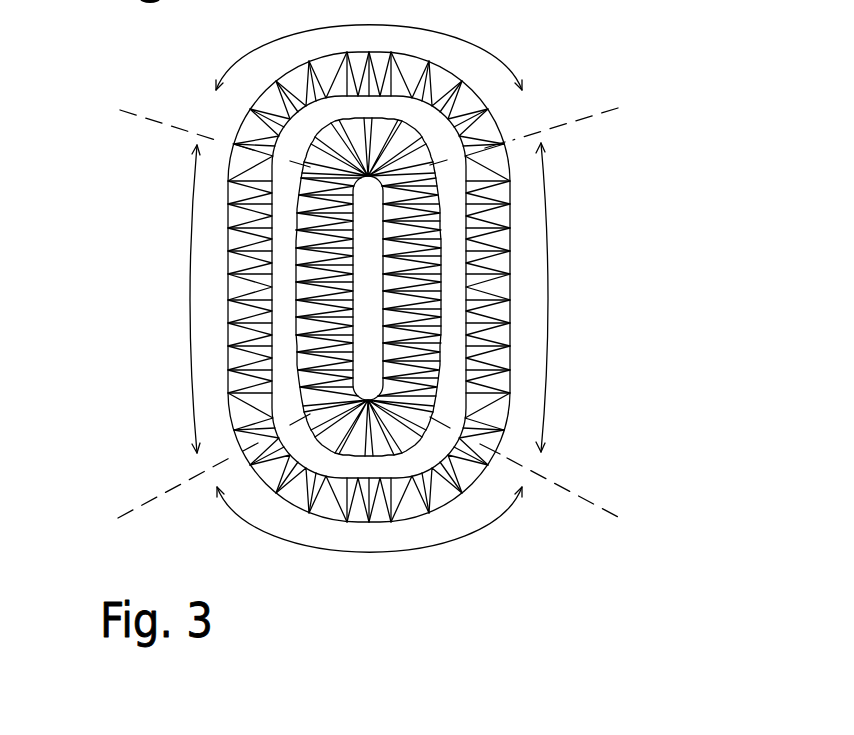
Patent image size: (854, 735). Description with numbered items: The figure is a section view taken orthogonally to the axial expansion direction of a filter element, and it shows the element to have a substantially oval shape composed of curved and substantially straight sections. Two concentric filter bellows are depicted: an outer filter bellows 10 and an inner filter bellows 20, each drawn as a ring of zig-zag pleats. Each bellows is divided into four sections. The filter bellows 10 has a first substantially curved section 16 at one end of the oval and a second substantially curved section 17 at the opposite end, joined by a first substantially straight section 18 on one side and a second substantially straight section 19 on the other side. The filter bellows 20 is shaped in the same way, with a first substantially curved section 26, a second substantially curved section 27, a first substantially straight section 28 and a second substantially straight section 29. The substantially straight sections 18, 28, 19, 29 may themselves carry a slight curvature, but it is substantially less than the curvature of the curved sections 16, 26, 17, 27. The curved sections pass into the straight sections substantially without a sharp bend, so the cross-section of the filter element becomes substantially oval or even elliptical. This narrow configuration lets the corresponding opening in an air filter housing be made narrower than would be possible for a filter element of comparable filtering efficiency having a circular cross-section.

The filter bellows 10 is at (512, 305).
The first substantially curved section 16 is at (412, 56).
The second substantially curved section 17 is at (405, 539).
The first substantially straight section 18 is at (595, 297).
The second substantially straight section 19 is at (131, 299).
The filter bellows 20 is at (420, 379).
The first substantially curved section 26 is at (495, 57).
The second substantially curved section 27 is at (496, 521).
The first substantially straight section 28 is at (546, 222).
The second substantially straight section 29 is at (190, 320).